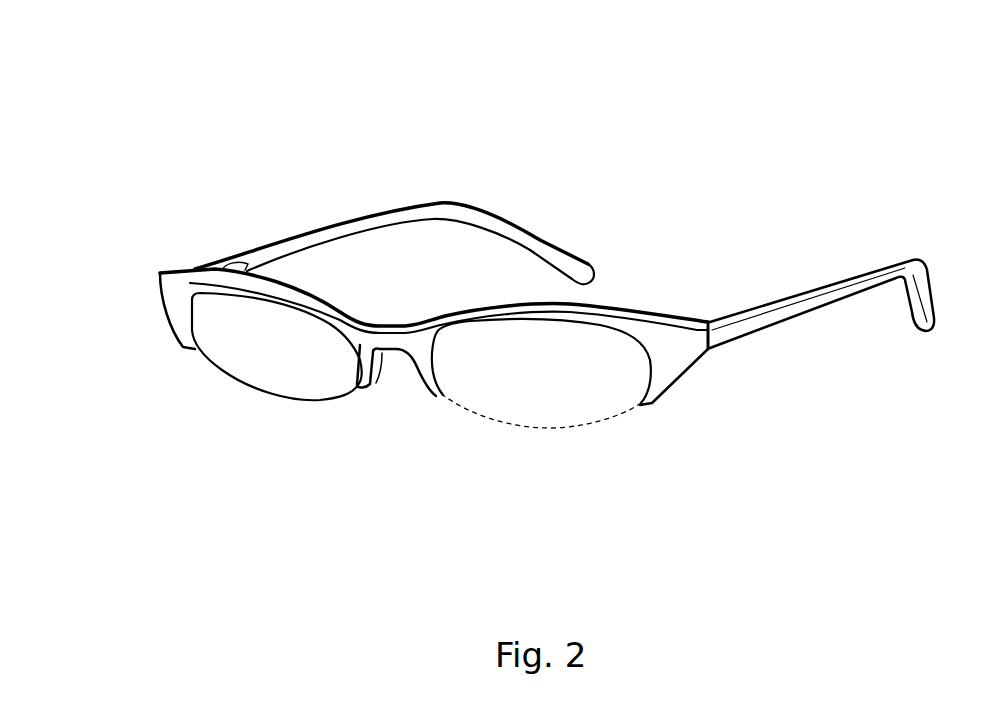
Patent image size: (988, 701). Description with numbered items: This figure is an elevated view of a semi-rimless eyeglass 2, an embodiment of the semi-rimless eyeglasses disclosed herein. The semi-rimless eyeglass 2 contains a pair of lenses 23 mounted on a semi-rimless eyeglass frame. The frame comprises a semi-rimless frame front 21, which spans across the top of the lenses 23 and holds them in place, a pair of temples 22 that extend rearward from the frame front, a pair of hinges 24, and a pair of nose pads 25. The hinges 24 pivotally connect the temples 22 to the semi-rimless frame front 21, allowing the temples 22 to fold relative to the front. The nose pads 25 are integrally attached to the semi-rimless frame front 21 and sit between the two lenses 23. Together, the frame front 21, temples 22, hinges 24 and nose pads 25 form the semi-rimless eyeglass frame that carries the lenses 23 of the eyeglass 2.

The semi-rimless eyeglass 2 is at (334, 193).
The semi-rimless frame front 21 is at (670, 354).
The temples 22 is at (767, 333).
The lenses 23 is at (277, 372).
The hinges 24 is at (205, 259).
The nose pads 25 is at (391, 381).